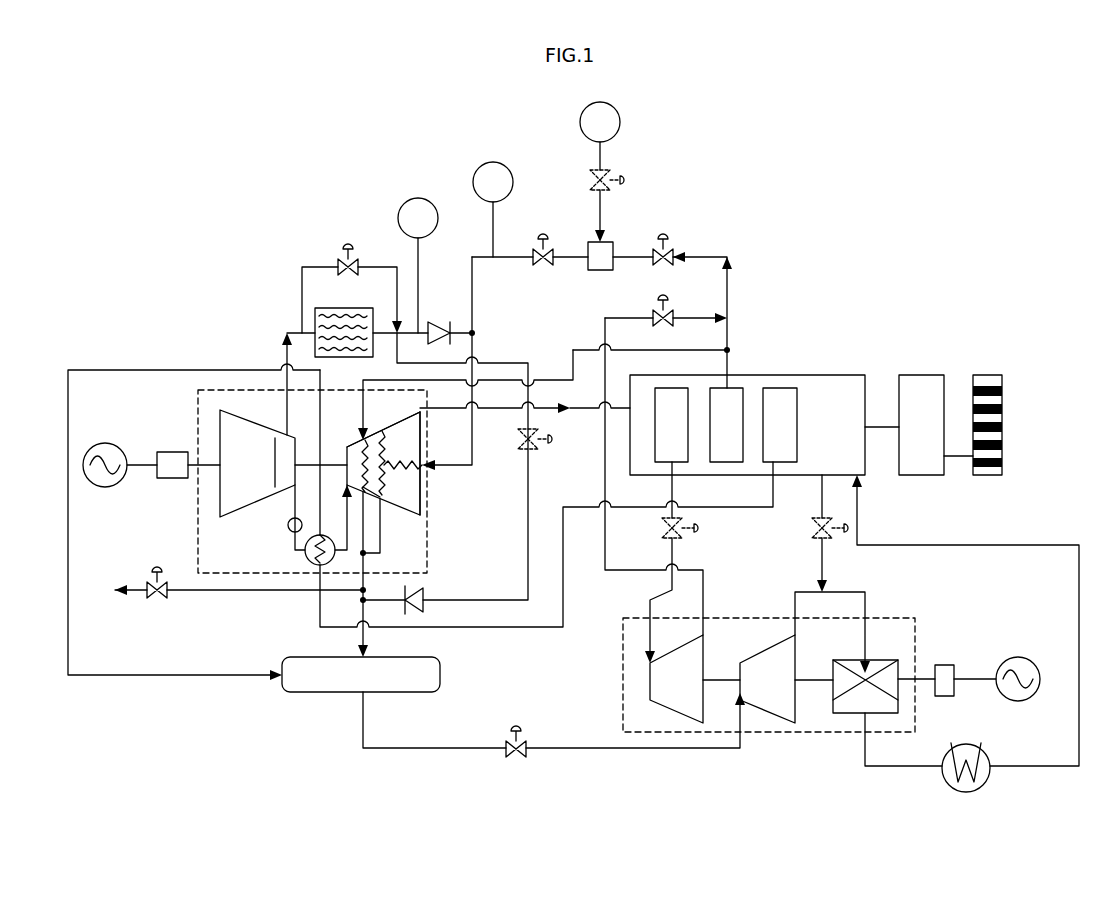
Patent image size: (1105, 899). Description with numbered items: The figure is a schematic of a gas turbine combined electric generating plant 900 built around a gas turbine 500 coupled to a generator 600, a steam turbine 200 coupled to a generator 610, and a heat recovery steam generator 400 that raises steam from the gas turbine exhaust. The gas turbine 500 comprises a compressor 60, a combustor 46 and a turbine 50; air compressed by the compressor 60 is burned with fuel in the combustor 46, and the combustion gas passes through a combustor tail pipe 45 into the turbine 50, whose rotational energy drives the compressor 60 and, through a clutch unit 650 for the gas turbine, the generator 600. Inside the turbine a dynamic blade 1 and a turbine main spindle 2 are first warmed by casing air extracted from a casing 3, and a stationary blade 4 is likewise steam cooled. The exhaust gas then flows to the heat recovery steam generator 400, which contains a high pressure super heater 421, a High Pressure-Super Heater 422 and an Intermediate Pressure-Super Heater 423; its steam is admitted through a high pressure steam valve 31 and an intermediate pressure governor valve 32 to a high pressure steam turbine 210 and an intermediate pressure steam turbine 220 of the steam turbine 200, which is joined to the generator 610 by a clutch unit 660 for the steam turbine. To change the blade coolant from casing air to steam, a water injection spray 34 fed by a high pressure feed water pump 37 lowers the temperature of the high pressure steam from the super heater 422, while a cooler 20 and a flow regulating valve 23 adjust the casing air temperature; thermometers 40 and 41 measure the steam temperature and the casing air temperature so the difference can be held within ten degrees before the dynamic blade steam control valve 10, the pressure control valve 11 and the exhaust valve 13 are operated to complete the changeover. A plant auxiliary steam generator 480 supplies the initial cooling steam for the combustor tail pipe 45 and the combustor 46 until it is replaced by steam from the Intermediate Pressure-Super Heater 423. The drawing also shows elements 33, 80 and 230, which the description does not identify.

The dynamic blade 1 is at (396, 487).
The turbine main spindle 2 is at (398, 469).
The casing 3 is at (350, 444).
The stationary blade 4 is at (390, 497).
The dynamic blade steam control valve 10 is at (545, 270).
The pressure control valve 11 is at (678, 246).
The exhaust valve 13 is at (165, 600).
The cooler 20 is at (306, 310).
The flow regulating valve 23 is at (336, 262).
The high pressure steam valve 31 is at (702, 532).
The intermediate pressure governor valve 32 is at (508, 758).
The valve 33 is at (826, 538).
The water injection spray 34 is at (605, 242).
The high pressure feed water pump 37 is at (620, 120).
The thermometer 40 is at (473, 177).
The thermometer 41 is at (399, 209).
The combustor tail pipe 45 is at (312, 565).
The combustor 46 is at (288, 528).
The turbine 50 is at (420, 417).
The compressor 60 is at (219, 500).
The tank 80 is at (286, 692).
The steam turbine 200 is at (782, 760).
The high pressure steam turbine 210 is at (655, 706).
The intermediate pressure steam turbine 220 is at (743, 706).
The expander 230 is at (859, 714).
The HRSG 400 is at (858, 376).
The high pressure super heater 421 is at (684, 388).
The High Pressure-Super Heater 422 is at (740, 388).
The Intermediate Pressure-Super Heater 423 is at (785, 471).
The plant auxiliary steam generator 480 is at (919, 376).
The gas turbine 500 is at (185, 403).
The generator 600 is at (105, 489).
The generator 610 is at (1030, 661).
The clutch unit for the gas turbine 650 is at (170, 450).
The clutch unit for the steam turbine 660 is at (945, 665).
The gas turbine combined electric generating plant 900 is at (196, 218).